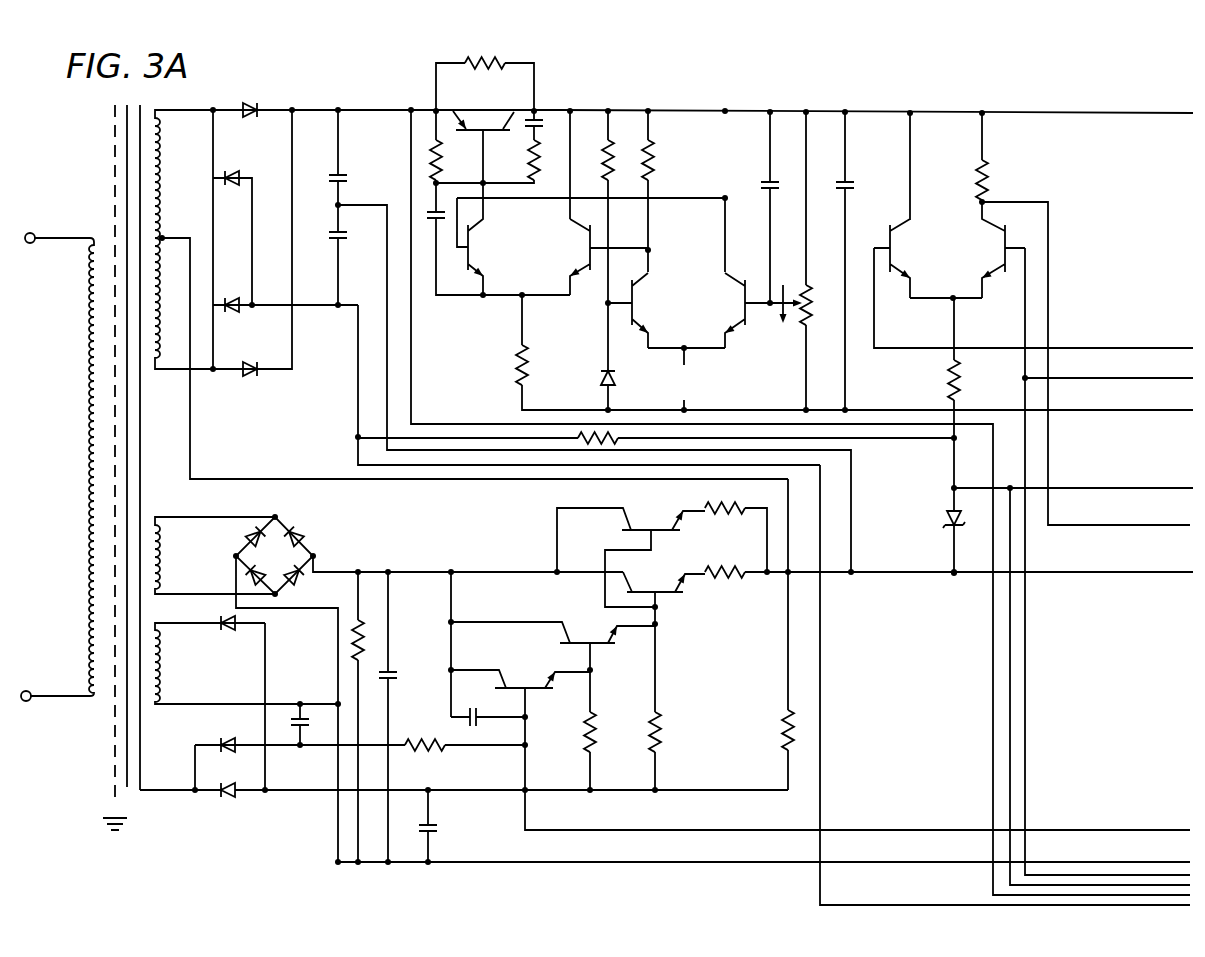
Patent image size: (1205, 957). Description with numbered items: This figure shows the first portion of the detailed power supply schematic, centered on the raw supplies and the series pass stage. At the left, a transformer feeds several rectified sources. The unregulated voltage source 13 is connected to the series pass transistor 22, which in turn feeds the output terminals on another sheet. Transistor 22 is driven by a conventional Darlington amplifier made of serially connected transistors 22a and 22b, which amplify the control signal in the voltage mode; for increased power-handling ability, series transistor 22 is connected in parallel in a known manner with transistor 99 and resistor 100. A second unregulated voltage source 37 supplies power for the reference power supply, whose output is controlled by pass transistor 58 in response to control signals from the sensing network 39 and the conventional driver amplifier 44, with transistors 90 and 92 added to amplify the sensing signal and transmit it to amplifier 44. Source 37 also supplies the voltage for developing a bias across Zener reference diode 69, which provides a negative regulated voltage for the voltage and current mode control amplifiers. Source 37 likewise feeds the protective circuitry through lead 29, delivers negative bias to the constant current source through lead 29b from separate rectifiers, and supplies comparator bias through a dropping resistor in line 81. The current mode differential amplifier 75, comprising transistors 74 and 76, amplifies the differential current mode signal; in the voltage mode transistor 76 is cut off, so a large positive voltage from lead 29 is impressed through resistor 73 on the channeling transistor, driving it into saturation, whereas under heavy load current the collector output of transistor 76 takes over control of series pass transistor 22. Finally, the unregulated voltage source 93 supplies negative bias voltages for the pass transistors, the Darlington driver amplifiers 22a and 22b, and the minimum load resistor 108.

The unregulated voltage source 13 is at (203, 570).
The series pass transistor 22 is at (652, 583).
The Darlington amplifier transistor 22a is at (589, 630).
The Darlington amplifier transistor 22b is at (528, 680).
The lead 29 is at (368, 108).
The lead 29b is at (822, 750).
The unregulated voltage source 37 is at (283, 207).
The sensing network 39 is at (727, 260).
The driver amplifier 44 is at (545, 251).
The pass transistor 58 is at (487, 122).
The Zener reference diode 69 is at (945, 518).
The resistor 73 is at (990, 173).
The transistor 74 is at (905, 240).
The current mode differential amplifier 75 is at (1033, 317).
The transistor 76 is at (990, 251).
The line 81 is at (899, 442).
The transistor 90 is at (650, 298).
The transistor 92 is at (740, 306).
The unregulated voltage source 93 is at (222, 674).
The transistor 99 is at (655, 516).
The resistor 100 is at (735, 503).
The minimum load resistor 108 is at (783, 724).